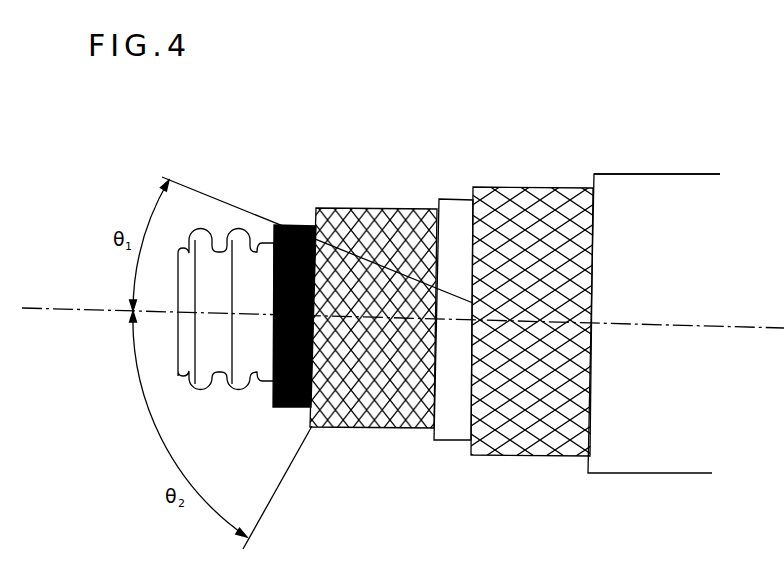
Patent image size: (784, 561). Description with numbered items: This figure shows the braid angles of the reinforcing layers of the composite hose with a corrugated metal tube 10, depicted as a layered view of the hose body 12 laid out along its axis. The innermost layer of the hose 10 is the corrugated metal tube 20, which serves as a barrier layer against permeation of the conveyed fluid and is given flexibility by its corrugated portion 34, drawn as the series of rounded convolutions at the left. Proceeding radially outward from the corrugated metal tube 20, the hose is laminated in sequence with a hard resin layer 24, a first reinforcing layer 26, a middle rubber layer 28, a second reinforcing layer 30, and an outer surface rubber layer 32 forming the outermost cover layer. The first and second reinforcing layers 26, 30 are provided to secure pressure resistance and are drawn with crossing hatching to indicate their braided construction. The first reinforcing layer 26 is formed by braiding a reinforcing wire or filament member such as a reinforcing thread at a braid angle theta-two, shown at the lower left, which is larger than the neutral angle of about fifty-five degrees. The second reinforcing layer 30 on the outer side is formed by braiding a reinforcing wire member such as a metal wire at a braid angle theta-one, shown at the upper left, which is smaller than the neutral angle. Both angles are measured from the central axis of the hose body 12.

The composite hose with a corrugated metal tube 10 is at (698, 86).
The hose body 12 is at (703, 176).
The corrugated metal tube 20 is at (193, 426).
The hard resin layer 24 is at (296, 221).
The first reinforcing layer 26 is at (386, 209).
The middle rubber layer 28 is at (457, 213).
The second reinforcing layer 30 is at (538, 200).
The outer surface rubber layer 32 is at (640, 190).
The corrugated portion 34 is at (236, 401).